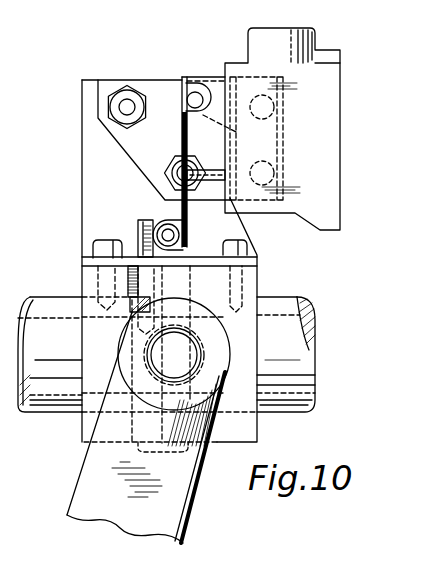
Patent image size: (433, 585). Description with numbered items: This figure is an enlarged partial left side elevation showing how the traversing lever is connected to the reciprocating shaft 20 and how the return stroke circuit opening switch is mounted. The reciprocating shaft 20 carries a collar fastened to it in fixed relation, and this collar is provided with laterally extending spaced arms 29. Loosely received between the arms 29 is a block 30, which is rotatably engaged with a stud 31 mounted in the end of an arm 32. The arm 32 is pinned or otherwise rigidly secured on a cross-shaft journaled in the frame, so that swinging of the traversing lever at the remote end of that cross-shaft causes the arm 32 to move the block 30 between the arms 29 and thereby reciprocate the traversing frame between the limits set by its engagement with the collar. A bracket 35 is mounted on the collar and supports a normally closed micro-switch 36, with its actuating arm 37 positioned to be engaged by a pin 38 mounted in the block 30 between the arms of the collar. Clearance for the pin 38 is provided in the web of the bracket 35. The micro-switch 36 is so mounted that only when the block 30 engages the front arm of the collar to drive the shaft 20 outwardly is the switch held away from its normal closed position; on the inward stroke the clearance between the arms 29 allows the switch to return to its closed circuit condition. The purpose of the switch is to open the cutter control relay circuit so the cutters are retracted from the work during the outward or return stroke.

The reciprocating shaft 20 is at (302, 382).
The spaced arms 29 is at (87, 427).
The block 30 is at (213, 304).
The stud 31 is at (180, 358).
The arm 32 is at (168, 525).
The bracket 35 is at (97, 133).
The micro-switch 36 is at (317, 128).
The actuating arm 37 is at (180, 144).
The pin 38 is at (140, 227).